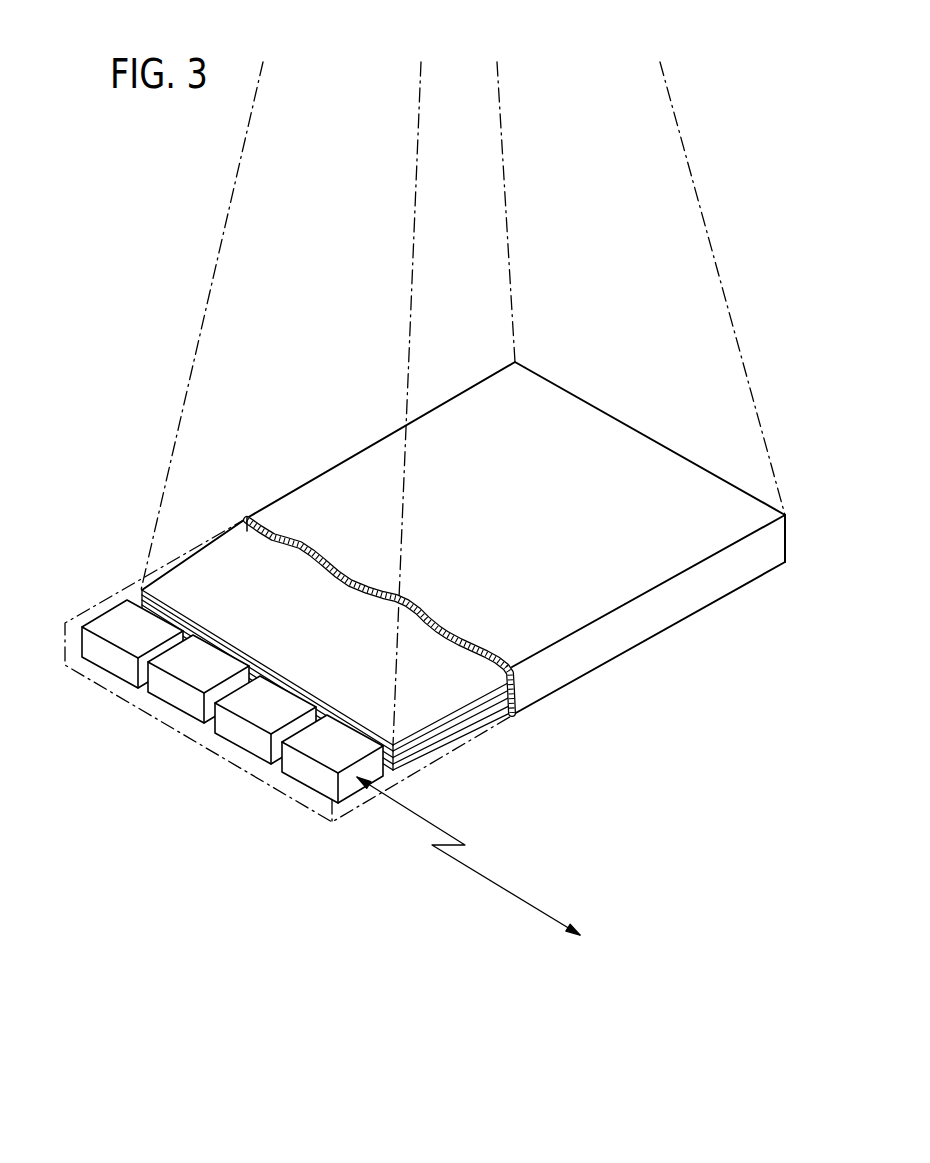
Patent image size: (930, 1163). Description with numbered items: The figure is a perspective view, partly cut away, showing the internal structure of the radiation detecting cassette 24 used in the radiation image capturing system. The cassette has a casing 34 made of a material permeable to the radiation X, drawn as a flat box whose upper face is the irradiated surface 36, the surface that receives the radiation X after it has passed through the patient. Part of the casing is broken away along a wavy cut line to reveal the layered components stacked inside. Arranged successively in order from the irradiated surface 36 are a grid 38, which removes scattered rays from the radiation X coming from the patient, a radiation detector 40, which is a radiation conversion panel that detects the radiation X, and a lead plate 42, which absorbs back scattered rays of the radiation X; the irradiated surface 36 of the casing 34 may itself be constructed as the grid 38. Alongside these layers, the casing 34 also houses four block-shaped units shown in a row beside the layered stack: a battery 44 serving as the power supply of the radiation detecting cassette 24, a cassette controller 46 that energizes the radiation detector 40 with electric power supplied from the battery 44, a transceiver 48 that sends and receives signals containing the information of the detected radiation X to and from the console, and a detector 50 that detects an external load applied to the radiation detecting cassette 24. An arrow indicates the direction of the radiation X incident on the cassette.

The radiation detecting cassette 24 is at (417, 593).
The casing 34 is at (610, 642).
The irradiated surface 36 is at (614, 439).
The grid 38 is at (441, 646).
The radiation detector 40 is at (478, 720).
The lead plate 42 is at (447, 740).
The battery 44 is at (118, 665).
The cassette controller 46 is at (177, 703).
The transceiver 48 is at (317, 778).
The detector 50 is at (243, 742).